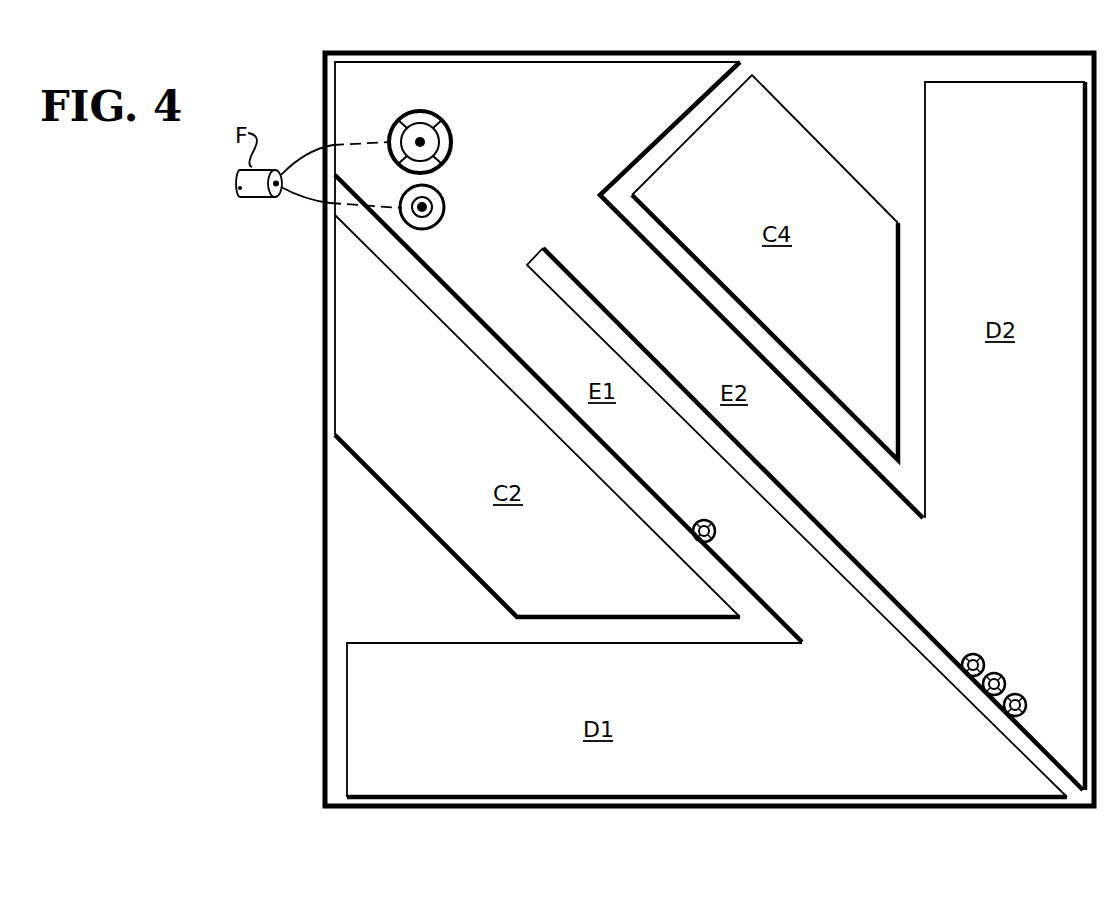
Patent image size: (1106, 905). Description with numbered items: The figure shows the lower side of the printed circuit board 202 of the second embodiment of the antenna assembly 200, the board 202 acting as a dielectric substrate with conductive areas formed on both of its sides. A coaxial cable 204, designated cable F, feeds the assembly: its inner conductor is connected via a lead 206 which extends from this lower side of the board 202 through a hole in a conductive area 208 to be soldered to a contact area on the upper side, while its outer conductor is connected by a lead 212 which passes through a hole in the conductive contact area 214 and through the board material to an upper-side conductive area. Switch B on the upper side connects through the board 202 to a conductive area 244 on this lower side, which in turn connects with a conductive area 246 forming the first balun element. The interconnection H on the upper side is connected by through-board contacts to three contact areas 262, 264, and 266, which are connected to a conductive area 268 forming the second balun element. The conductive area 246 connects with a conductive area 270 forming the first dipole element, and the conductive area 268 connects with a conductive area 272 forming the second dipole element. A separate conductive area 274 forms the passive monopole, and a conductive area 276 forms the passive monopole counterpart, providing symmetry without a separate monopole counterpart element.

The antenna assembly 200 is at (517, 822).
The printed circuit board 202 is at (325, 372).
The coaxial cable 204 is at (255, 198).
The lead 206 is at (308, 203).
The conductive area 208 is at (441, 199).
The lead 212 is at (300, 156).
The conductive contact area 214 is at (433, 133).
The conductive area 244 is at (697, 538).
The conductive area 246 is at (580, 333).
The contact area 262 is at (992, 615).
The contact area 264 is at (1003, 678).
The contact area 266 is at (1005, 712).
The conductive area 268 is at (893, 570).
The conductive area 270 is at (430, 647).
The conductive area 272 is at (944, 150).
The conductive area 274 is at (453, 527).
The conductive area 276 is at (786, 128).